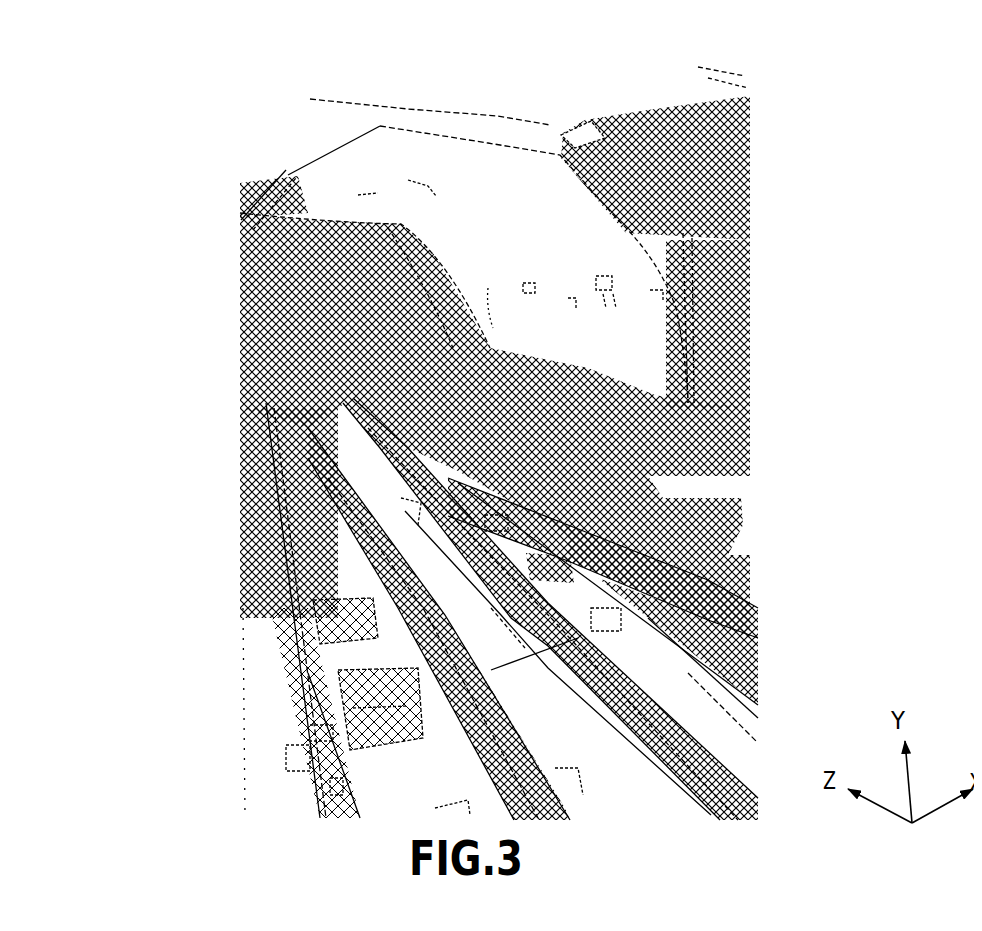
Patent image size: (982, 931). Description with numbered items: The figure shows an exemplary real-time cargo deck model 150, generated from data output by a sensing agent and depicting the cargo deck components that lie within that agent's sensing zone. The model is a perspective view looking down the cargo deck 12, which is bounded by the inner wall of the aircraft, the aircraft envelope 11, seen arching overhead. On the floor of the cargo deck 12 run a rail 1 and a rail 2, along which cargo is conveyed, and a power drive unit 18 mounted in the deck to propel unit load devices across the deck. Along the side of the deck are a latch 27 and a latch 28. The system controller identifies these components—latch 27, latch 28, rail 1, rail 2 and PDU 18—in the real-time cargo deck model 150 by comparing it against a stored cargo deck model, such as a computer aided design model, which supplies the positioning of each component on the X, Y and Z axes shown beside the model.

The real-time cargo deck model 150 is at (177, 95).
The aircraft envelope 11 is at (558, 236).
The cargo deck 12 is at (546, 707).
The rail 1 is at (455, 726).
The rail 2 is at (708, 722).
The power drive unit 18 is at (549, 564).
The latch 27 is at (325, 688).
The latch 28 is at (295, 608).